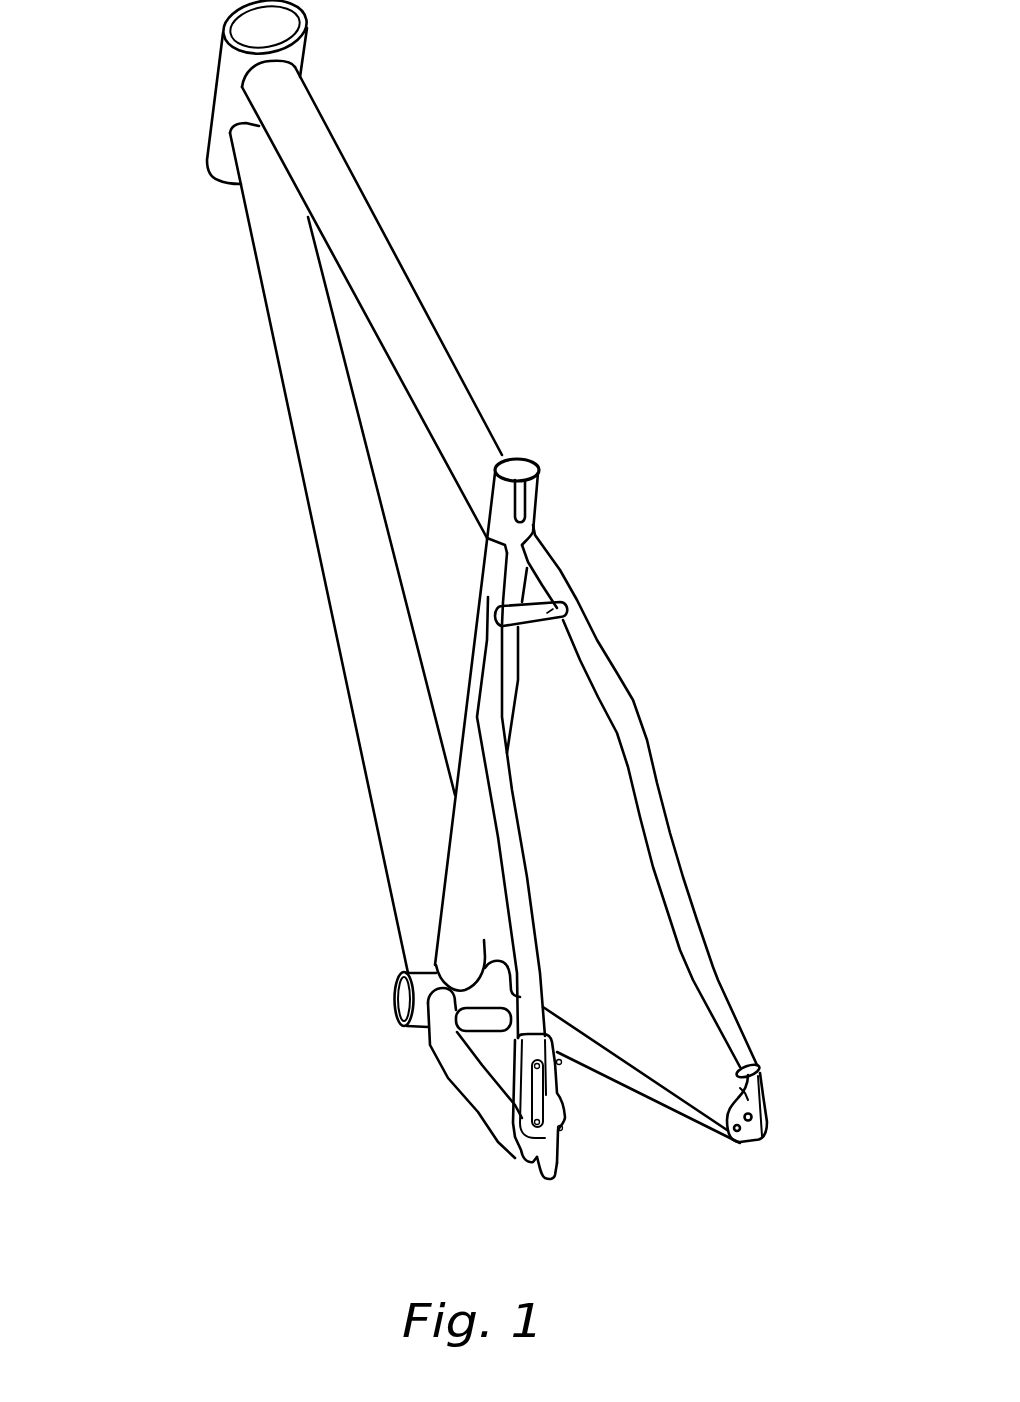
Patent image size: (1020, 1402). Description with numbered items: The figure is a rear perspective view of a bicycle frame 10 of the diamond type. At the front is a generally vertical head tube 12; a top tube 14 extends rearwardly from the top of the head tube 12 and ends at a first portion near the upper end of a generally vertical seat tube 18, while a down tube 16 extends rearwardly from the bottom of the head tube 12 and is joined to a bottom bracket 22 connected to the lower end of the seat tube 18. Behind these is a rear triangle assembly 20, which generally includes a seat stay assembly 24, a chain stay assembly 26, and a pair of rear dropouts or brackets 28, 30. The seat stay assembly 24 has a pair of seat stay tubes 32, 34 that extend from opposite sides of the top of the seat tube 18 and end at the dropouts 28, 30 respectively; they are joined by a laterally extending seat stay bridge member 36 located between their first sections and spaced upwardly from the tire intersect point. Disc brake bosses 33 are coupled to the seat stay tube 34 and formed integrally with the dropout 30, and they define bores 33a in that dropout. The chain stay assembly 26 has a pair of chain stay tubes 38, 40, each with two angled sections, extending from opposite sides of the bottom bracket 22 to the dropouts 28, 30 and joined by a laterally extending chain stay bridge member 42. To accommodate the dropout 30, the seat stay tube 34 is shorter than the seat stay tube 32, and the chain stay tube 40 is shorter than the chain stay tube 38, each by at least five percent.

The bicycle frame 10 is at (705, 257).
The head tube 12 is at (212, 84).
The top tube 14 is at (421, 295).
The down tube 16 is at (321, 601).
The seat tube 18 is at (543, 508).
The rear triangle assembly 20 is at (756, 652).
The bottom bracket 22 is at (417, 1037).
The seat stay assembly 24 is at (794, 785).
The chain stay assembly 26 is at (497, 1149).
The rear dropout 28 is at (779, 1128).
The rear dropout 30 is at (556, 1178).
The seat stay tube 32 is at (666, 830).
The disc brake bosses 33 is at (569, 1129).
The bores 33a is at (522, 1052).
The seat stay tube 34 is at (541, 878).
The seat stay bridge member 36 is at (565, 610).
The chain stay tube 38 is at (698, 1113).
The chain stay tube 40 is at (448, 1082).
The chain stay bridge member 42 is at (468, 1020).